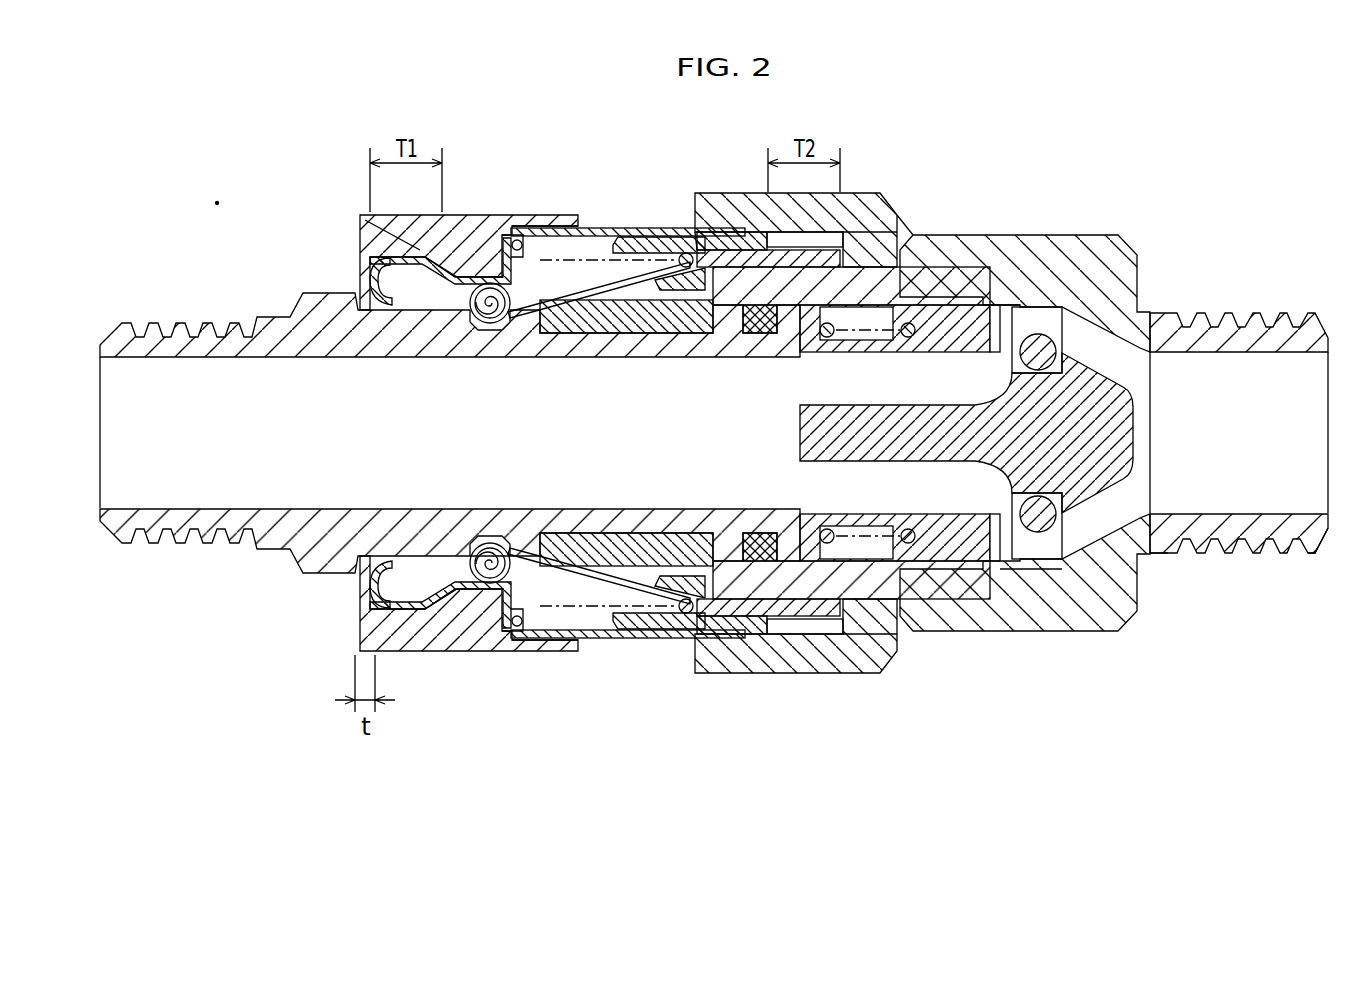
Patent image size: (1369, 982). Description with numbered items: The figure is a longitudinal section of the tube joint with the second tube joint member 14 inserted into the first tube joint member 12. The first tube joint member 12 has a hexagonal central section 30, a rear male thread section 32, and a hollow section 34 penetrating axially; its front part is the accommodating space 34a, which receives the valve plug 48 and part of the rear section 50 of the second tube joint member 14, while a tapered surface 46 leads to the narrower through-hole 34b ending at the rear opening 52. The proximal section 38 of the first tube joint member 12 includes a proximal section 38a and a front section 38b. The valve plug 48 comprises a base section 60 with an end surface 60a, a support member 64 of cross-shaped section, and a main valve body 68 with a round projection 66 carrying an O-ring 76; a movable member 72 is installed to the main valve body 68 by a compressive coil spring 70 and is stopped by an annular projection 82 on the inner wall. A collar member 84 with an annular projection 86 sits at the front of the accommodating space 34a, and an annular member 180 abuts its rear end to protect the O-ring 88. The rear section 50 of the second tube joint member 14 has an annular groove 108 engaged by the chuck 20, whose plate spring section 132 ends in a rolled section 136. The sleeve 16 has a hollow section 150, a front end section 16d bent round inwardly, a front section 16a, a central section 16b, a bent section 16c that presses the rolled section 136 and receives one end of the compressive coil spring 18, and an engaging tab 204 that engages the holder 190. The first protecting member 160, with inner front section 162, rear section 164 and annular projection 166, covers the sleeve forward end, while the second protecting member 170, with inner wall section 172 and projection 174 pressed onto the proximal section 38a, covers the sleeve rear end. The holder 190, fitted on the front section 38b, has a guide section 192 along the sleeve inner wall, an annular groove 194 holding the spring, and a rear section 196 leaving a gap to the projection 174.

The first tube joint member 12 is at (1060, 235).
The second tube joint member 14 is at (300, 290).
The sleeve 16 is at (575, 225).
The front section of the sleeve 16a is at (380, 228).
The central section of the sleeve 16b is at (522, 243).
The bent section 16c is at (470, 214).
The front end section of the sleeve 16d is at (380, 262).
The compressive coil spring 18 is at (500, 272).
The chuck 20 is at (545, 300).
The central section of the first tube joint member 30 is at (1015, 305).
The male thread section 32 is at (1235, 315).
The hollow section 34 is at (1150, 525).
The accommodating space 34a is at (1060, 582).
The through-hole 34b is at (1270, 530).
The proximal section 38 is at (795, 330).
The proximal section of the proximal section 38a is at (905, 230).
The front section of the proximal section 38b is at (720, 240).
The tapered surface 46 is at (1100, 560).
The valve plug 48 is at (995, 340).
The rear section of the second tube joint member 50 is at (670, 525).
The opening 52 is at (1270, 372).
The base section 60 is at (841, 675).
The end surface of the base section 60a is at (792, 622).
The support member 64 is at (930, 562).
The round projection 66 is at (1085, 380).
The main valve body 68 is at (882, 634).
The compressive coil spring 70 is at (830, 340).
The movable member 72 is at (980, 562).
The O-ring 76 is at (1035, 334).
The annular projection 82 is at (1005, 562).
The collar member 84 is at (660, 622).
The annular projection 86 is at (630, 640).
The O-ring 88 is at (760, 533).
The annular groove 108 is at (508, 622).
The plate spring section 132 is at (590, 582).
The rolled section 136 is at (500, 570).
The hollow section of the sleeve 150 is at (600, 238).
The first protecting member 160 is at (487, 584).
The front section of the first protecting member inner wall 162 is at (380, 588).
The rear section of the first protecting member inner wall 164 is at (560, 645).
The annular projection 166 is at (445, 654).
The second protecting member 170 is at (850, 193).
The inner wall section 172 is at (790, 240).
The projection 174 is at (880, 240).
The annular member 180 is at (722, 526).
The holder 190 is at (702, 250).
The guide section 192 is at (620, 227).
The annular groove 194 is at (678, 282).
The rear section of the holder 196 is at (755, 322).
The engaging tab 204 is at (684, 253).